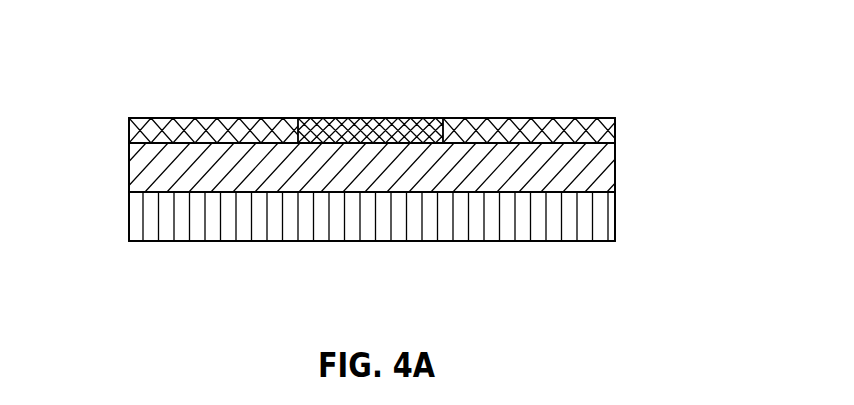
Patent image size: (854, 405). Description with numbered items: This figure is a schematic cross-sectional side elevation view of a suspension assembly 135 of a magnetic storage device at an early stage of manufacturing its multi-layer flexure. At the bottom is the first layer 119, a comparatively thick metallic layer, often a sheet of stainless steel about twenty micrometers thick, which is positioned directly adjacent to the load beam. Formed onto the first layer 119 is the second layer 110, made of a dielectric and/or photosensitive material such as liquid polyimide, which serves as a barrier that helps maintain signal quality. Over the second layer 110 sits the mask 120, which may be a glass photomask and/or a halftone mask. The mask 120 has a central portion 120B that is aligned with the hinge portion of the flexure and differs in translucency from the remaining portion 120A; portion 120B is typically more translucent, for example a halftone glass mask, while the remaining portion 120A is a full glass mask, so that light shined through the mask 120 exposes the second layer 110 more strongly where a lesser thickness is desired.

The suspension assembly 135 is at (545, 65).
The mask 120 is at (418, 106).
The remaining portion of the mask 120A is at (213, 118).
The hinge portion of the mask 120B is at (402, 118).
The second layer 110 is at (129, 168).
The first layer 119 is at (615, 215).